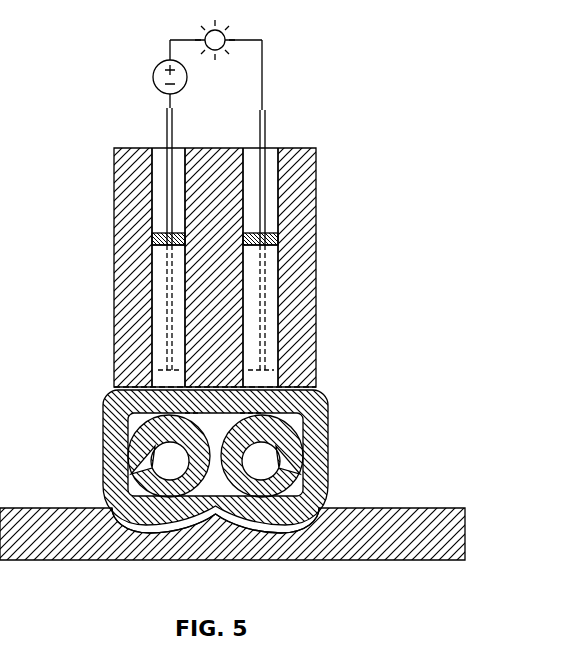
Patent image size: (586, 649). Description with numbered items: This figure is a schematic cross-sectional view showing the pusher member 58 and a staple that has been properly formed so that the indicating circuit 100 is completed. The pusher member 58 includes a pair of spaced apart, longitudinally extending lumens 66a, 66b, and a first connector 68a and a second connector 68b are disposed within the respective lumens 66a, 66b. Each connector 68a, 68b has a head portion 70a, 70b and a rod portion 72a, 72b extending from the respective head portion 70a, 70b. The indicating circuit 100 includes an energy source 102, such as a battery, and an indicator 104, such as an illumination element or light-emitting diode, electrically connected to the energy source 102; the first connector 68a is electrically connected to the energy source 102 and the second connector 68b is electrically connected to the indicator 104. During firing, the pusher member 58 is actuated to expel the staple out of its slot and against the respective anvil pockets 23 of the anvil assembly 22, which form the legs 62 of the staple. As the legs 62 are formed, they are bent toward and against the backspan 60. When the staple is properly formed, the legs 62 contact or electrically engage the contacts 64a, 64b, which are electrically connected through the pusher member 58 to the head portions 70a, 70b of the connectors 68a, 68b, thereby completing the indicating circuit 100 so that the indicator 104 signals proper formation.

The indicating circuit 100 is at (397, 42).
The indicator 104 is at (206, 34).
The energy source 102 is at (155, 72).
The first connector 68a is at (163, 138).
The second connector 68b is at (268, 138).
The rod portion 72a is at (168, 190).
The rod portion 72b is at (263, 190).
The pusher member 58 is at (319, 218).
The head portion 70a is at (157, 280).
The head portion 70b is at (275, 280).
The lumen 66a is at (165, 304).
The lumen 66b is at (266, 304).
The backspan 60 is at (114, 380).
The contact 64a is at (133, 418).
The contact 64b is at (298, 418).
The anvil pocket 23 is at (116, 515).
The anvil assembly 22 is at (445, 508).
The leg 62 is at (130, 545).